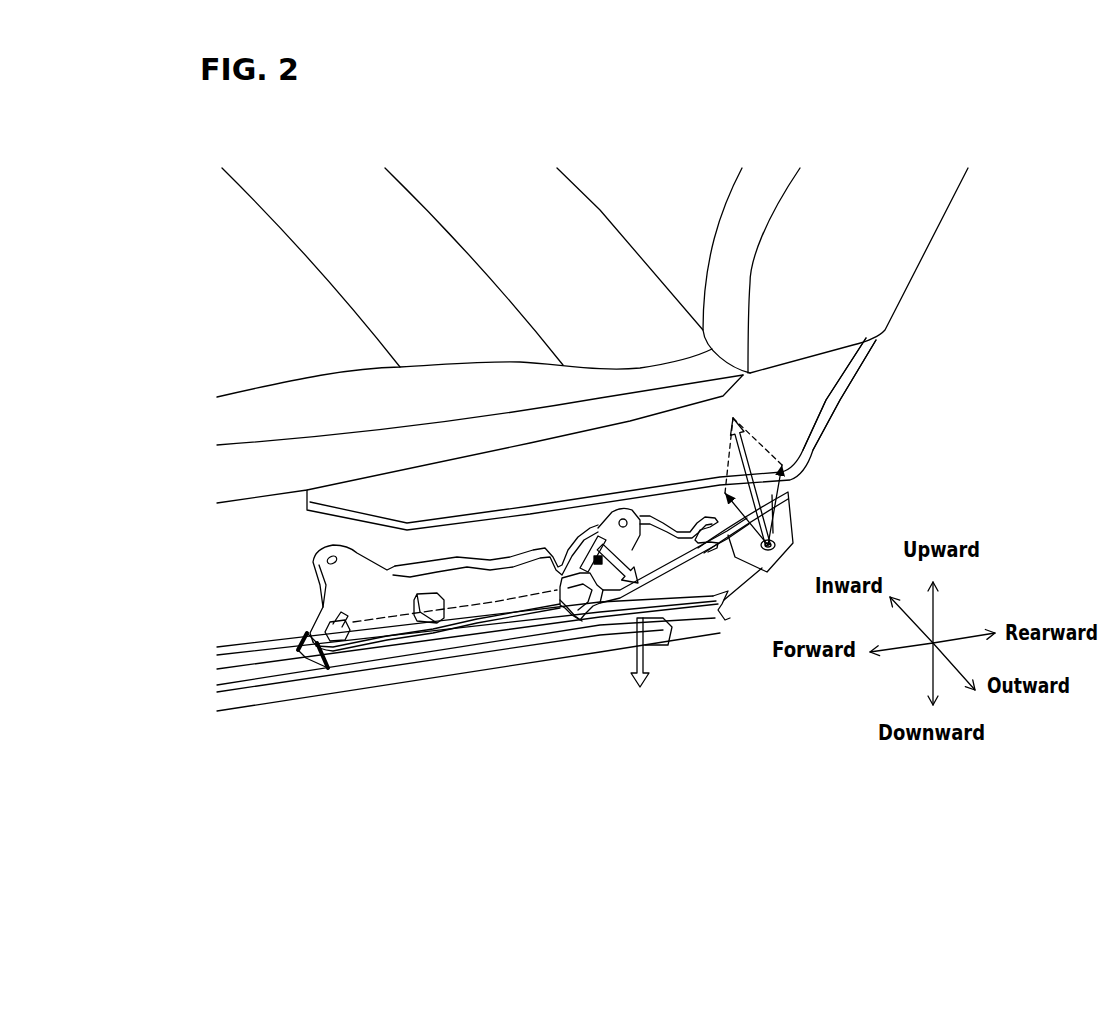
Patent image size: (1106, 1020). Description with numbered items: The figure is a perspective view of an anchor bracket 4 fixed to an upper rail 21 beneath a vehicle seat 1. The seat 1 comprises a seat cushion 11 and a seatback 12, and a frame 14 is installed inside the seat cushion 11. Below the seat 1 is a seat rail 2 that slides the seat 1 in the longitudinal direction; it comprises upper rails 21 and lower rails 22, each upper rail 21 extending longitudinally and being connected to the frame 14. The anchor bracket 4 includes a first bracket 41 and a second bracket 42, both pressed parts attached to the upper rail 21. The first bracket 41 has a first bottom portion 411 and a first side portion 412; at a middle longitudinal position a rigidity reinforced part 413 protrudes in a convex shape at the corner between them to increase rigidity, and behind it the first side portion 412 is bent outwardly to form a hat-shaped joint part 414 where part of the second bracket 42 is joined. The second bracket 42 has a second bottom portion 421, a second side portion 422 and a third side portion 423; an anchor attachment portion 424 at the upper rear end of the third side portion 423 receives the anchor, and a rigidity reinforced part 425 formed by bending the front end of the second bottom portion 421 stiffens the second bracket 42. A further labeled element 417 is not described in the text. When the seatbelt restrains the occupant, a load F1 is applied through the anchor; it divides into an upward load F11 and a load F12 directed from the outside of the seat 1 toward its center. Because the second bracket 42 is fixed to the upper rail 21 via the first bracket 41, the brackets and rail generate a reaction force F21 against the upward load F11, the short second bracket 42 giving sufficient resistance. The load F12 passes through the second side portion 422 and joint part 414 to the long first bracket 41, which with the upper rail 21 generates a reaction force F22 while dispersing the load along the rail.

The seat 1 is at (506, 163).
The seat rail 2 is at (243, 633).
The anchor bracket 4 is at (596, 595).
The seat cushion 11 is at (228, 507).
The seatback 12 is at (930, 253).
The frame 14 is at (840, 403).
The upper rail 21 is at (323, 663).
The lower rail 22 is at (233, 700).
The first bracket 41 is at (514, 595).
The second bracket 42 is at (686, 601).
The first bottom portion 411 is at (397, 628).
The first side portion 412 is at (390, 568).
The rigidity reinforced part 413 is at (414, 602).
The joint part 414 is at (642, 530).
The pin 417 is at (582, 553).
The second bottom portion 421 is at (595, 600).
The second side portion 422 is at (553, 580).
The third side portion 423 is at (697, 585).
The anchor attachment portion 424 is at (797, 535).
The rigidity reinforced part 425 is at (560, 605).
The load F1 is at (750, 440).
The upward load F11 is at (793, 478).
The load in the vehicle width direction F12 is at (725, 508).
The reaction force F21 is at (657, 660).
The reaction force F22 is at (597, 555).